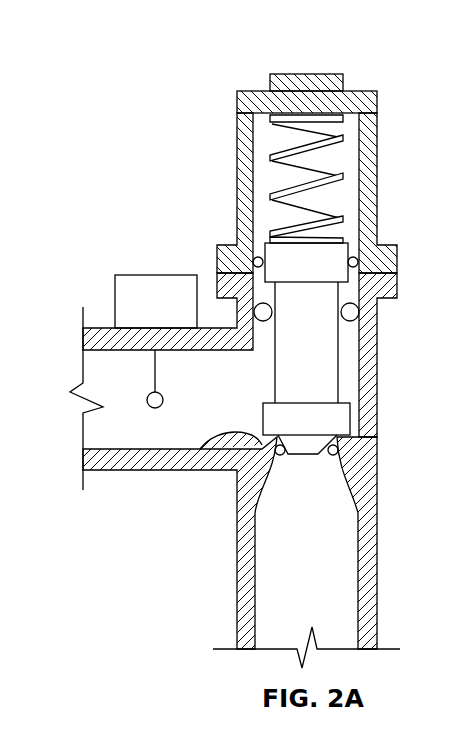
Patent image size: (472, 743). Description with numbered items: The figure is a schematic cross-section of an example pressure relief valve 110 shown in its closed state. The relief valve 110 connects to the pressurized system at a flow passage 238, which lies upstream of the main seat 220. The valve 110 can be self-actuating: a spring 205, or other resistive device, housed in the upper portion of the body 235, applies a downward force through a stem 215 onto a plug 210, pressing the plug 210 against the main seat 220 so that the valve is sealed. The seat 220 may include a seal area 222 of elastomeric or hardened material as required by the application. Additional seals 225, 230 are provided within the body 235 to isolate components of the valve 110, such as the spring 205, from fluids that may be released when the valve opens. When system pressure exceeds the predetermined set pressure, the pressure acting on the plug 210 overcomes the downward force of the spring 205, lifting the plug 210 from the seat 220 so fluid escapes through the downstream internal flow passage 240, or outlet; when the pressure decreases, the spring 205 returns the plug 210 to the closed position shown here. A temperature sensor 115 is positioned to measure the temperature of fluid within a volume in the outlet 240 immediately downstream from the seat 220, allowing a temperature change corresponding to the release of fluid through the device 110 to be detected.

The pressure relief valve 110 is at (127, 93).
The temperature sensor 115 is at (157, 275).
The spring 205 is at (340, 137).
The plug 210 is at (342, 420).
The stem 215 is at (337, 332).
The main seat 220 is at (208, 455).
The seal area 222 is at (342, 447).
The seal 225 is at (356, 316).
The seal 230 is at (355, 257).
The body 235 is at (377, 158).
The flow passage 238 is at (327, 563).
The internal flow passage 240 is at (98, 367).